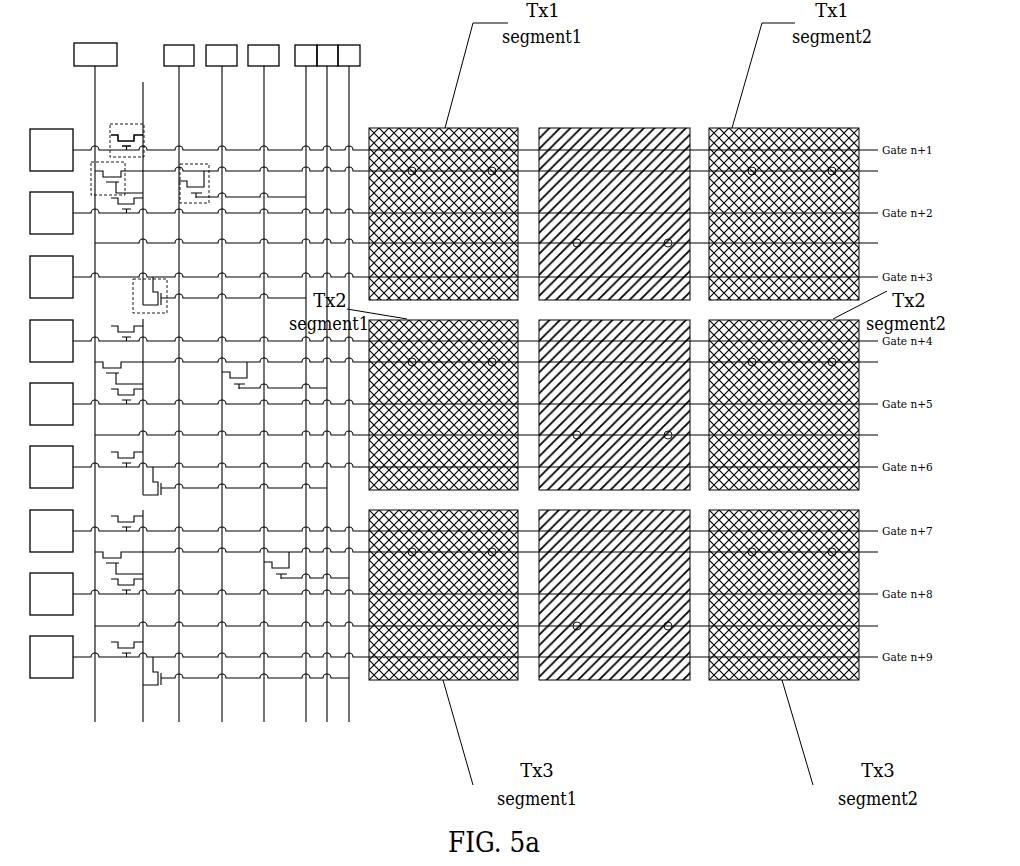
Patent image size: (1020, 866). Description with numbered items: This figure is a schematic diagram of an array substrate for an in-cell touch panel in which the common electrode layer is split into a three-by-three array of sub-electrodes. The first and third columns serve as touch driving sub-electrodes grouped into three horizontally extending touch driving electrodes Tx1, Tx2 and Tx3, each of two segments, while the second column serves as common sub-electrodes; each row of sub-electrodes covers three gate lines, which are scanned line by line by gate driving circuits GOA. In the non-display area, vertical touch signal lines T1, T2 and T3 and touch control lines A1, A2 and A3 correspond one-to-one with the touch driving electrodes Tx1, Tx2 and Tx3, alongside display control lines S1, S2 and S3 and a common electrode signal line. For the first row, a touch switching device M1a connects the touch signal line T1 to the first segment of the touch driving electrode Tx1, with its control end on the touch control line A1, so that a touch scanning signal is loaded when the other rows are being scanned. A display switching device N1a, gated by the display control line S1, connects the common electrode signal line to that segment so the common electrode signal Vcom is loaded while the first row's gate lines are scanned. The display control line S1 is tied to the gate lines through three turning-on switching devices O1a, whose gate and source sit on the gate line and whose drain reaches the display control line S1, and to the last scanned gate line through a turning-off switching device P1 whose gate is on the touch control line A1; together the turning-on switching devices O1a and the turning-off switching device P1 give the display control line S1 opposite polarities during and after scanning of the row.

The gate driving circuit GOA is at (51, 403).
The common electrode signal Vcom is at (669, 787).
The touch signal line T1 is at (179, 383).
The touch signal line T2 is at (221, 383).
The touch signal line T3 is at (263, 383).
The touch control line A1 is at (306, 383).
The touch control line A2 is at (327, 383).
The touch control line A3 is at (349, 383).
The display control line S1 is at (145, 188).
The display control line S2 is at (150, 407).
The display control line S3 is at (150, 615).
The touch driving electrode Tx1 is at (527, 171).
The touch driving electrode Tx2 is at (527, 362).
The touch driving electrode Tx3 is at (527, 552).
The turning-on switching device O1a is at (127, 135).
The display switching device N1a is at (105, 178).
The touch switching device M1a is at (242, 177).
The turning-off switching device P1 is at (211, 295).